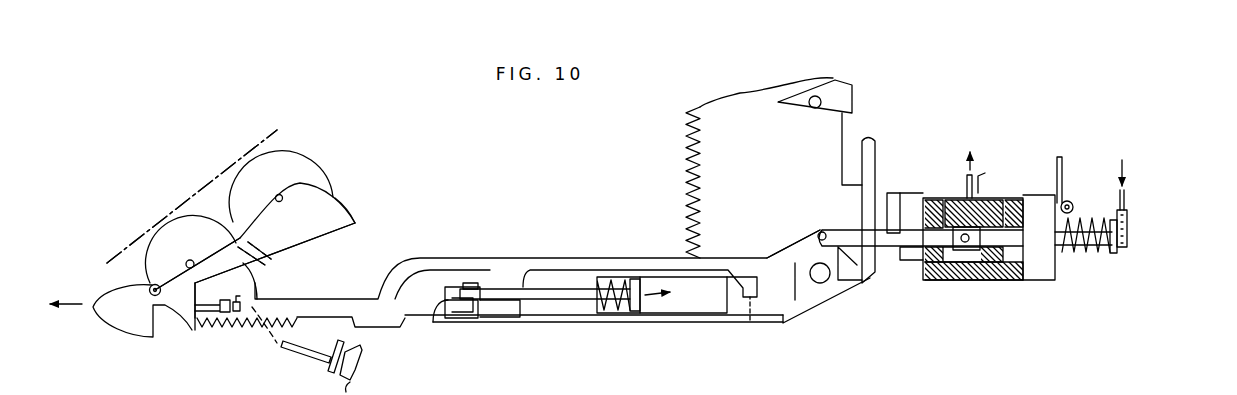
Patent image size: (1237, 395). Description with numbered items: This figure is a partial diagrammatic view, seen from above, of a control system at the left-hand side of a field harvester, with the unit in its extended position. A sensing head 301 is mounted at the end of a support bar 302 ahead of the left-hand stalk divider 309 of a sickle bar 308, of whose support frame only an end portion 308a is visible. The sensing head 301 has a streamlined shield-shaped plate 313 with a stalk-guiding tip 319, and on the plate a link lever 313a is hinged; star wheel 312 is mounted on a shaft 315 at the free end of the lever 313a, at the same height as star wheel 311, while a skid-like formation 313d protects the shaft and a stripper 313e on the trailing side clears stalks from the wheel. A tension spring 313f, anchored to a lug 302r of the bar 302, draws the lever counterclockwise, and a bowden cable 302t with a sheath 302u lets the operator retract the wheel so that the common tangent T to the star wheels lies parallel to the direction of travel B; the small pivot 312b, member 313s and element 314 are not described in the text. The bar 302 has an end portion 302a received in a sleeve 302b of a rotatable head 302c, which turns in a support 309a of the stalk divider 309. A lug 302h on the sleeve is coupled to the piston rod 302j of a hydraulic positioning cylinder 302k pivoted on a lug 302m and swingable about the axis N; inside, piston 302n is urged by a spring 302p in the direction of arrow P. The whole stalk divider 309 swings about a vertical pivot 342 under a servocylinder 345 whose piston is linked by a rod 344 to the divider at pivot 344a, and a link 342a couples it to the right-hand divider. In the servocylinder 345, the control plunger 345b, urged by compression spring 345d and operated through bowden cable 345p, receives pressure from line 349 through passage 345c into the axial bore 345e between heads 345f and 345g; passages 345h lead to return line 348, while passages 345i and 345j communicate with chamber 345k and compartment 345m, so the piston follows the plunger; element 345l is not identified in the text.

The sensing head 301 is at (178, 210).
The star wheel 311 is at (152, 233).
The star wheel 312 is at (326, 172).
The pivot pin 312b is at (150, 289).
The shield-shaped plate 313 is at (165, 328).
The link lever 313a is at (300, 243).
The skid-like formation 313d is at (193, 330).
The stripper 313e is at (335, 199).
The tension spring 313f is at (238, 330).
The clamp 313s is at (232, 303).
The cam 314 is at (190, 258).
The shaft 315 is at (283, 200).
The stalk-guiding tip 319 is at (121, 315).
The support bar 302 is at (316, 298).
The end portion of bar 302a is at (430, 323).
The sleeve 302b is at (478, 318).
The rotatable head 302c is at (520, 318).
The lug 302h is at (470, 287).
The piston rod 302j is at (553, 297).
The hydraulic positioning cylinder 302k is at (685, 316).
The lug 302m is at (778, 318).
The piston 302n is at (635, 313).
The spring 302p is at (608, 284).
The lug 302r is at (333, 320).
The bowden cable 302t is at (250, 278).
The sheath 302u is at (313, 356).
The sickle bar 308 is at (688, 151).
The end portion of support frame 308a is at (855, 96).
The stalk divider 309 is at (597, 323).
The support 309a is at (525, 268).
The vertical pivot 342 is at (822, 283).
The link 342a is at (876, 146).
The rod 344 is at (921, 239).
The pivot 344a is at (822, 231).
The servocylinder 345 is at (1097, 130).
The control plunger 345b is at (1070, 248).
The passage 345c is at (1130, 237).
The compression spring 345d is at (1085, 228).
The axial bore 345e is at (958, 257).
The plunger head 345f is at (905, 247).
The plunger head 345g is at (988, 204).
The passages 345h is at (945, 198).
The passage 345i is at (1005, 282).
The passage 345j is at (975, 272).
The chamber 345k is at (1050, 282).
The rod 345l is at (1057, 200).
The compartment 345m is at (913, 200).
The bowden cable 345p is at (1068, 203).
The hydraulic line 348 is at (979, 181).
The hydraulic line 349 is at (1128, 205).
The common tangent T is at (263, 138).
The direction of travel B is at (68, 308).
The spring direction arrow P is at (656, 300).
The swing axis N is at (750, 328).